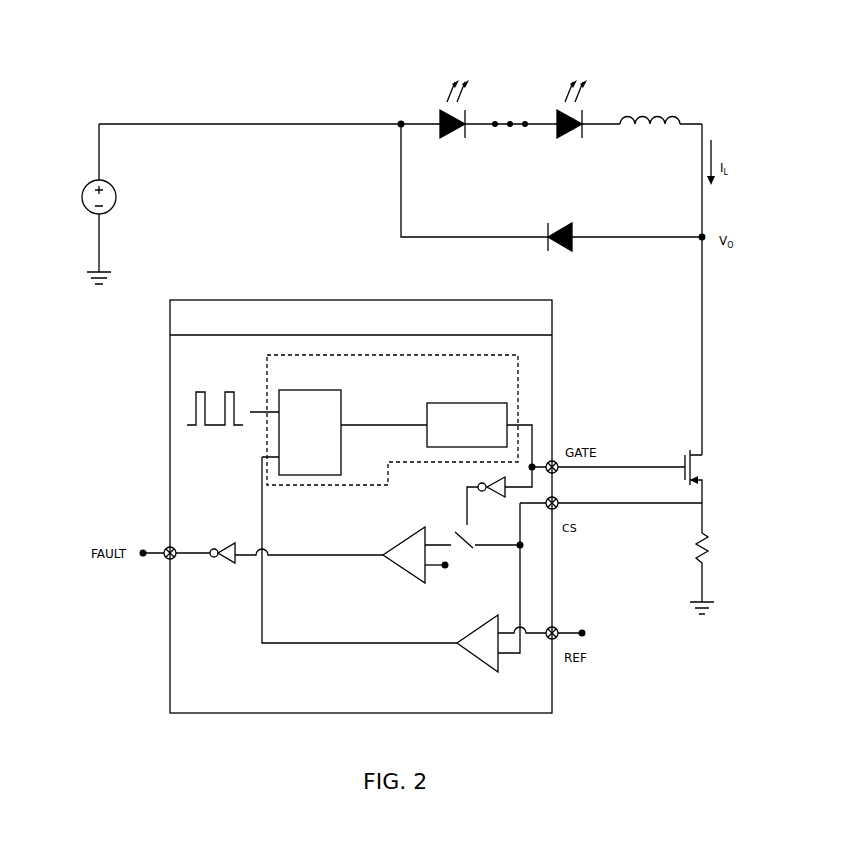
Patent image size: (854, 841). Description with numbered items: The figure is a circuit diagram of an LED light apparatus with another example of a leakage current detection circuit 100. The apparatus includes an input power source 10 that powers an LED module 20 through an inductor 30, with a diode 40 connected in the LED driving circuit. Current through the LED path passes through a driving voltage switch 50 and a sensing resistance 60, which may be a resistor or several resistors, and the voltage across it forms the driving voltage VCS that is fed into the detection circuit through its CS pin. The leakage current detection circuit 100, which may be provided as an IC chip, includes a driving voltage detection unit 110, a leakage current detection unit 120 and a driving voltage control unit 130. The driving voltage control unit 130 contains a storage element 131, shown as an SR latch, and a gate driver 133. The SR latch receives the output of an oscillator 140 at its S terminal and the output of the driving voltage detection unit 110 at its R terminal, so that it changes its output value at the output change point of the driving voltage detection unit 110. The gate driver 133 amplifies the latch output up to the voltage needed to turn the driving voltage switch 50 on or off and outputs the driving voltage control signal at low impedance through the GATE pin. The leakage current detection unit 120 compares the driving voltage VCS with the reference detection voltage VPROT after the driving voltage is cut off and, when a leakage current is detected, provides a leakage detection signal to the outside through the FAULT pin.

The input power source 10 is at (82, 202).
The LED module 20 is at (572, 58).
The inductor 30 is at (650, 108).
The diode 40 is at (580, 226).
The driving voltage switch 50 is at (707, 470).
The sensing resistance 60 is at (707, 550).
The leakage current detection circuit 100 is at (313, 299).
The driving voltage detection unit 110 is at (470, 663).
The leakage current detection unit 120 is at (396, 571).
The driving voltage control unit 130 is at (308, 492).
The storage element 131 is at (316, 391).
The gate driver 133 is at (466, 402).
The oscillator 140 is at (211, 436).